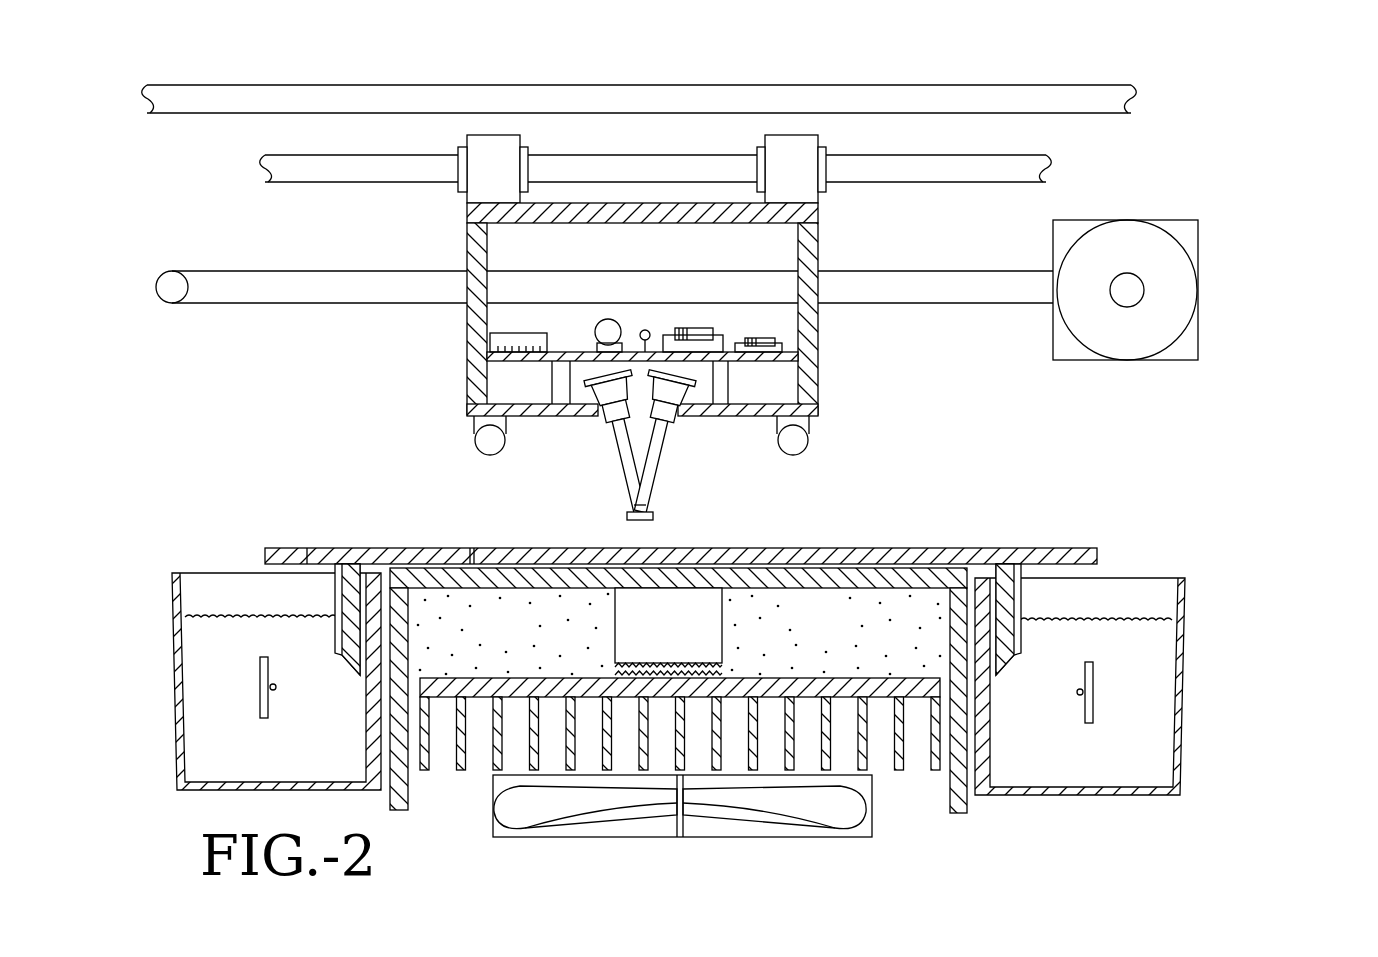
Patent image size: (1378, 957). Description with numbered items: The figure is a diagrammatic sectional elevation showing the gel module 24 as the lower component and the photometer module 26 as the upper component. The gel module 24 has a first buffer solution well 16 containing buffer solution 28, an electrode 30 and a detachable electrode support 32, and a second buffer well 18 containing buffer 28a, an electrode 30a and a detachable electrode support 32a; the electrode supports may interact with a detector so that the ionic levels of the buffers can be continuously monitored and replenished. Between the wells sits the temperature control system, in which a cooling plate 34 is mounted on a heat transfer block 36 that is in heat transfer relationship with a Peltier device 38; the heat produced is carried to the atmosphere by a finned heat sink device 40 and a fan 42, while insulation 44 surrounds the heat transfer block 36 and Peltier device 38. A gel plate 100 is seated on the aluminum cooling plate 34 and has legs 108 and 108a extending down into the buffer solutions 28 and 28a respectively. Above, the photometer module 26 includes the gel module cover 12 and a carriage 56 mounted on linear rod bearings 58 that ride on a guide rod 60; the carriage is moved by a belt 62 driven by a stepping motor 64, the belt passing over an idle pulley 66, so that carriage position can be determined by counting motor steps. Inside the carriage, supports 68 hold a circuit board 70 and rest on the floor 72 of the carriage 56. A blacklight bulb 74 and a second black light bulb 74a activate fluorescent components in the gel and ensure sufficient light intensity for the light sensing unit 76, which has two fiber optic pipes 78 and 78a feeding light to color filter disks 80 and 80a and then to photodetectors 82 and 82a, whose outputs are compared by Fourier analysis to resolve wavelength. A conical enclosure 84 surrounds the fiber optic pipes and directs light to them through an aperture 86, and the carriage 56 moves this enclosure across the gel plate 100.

The gel module cover 12 is at (1057, 101).
The first buffer solution well 16 is at (172, 700).
The buffer well 18 is at (1183, 710).
The gel module 24 is at (1232, 672).
The photometer module 26 is at (1246, 301).
The buffer solution 28 is at (212, 757).
The buffer 28a is at (1068, 767).
The electrode 30 is at (277, 688).
The electrode 30a is at (1077, 693).
The detachable electrode support 32 is at (262, 673).
The detachable electrode support 32a is at (1091, 680).
The cooling plate 34 is at (838, 580).
The heat transfer block 36 is at (659, 631).
The Peltier device 38 is at (722, 676).
The finned heat sink device 40 is at (788, 695).
The fan 42 is at (856, 806).
The insulation 44 is at (479, 631).
The carriage 56 is at (483, 321).
The linear rod bearings 58 is at (490, 168).
The guide rod 60 is at (900, 173).
The belt 62 is at (898, 272).
The stepping motor 64 is at (1110, 250).
The idle pulley 66 is at (176, 290).
The supports 68 is at (558, 385).
The circuit board 70 is at (806, 355).
The floor 72 is at (811, 407).
The blacklight bulb 74 is at (487, 442).
The second black light bulb 74a is at (791, 449).
The light sensing unit 76 is at (645, 458).
The fiber optic pipe 78 is at (623, 478).
The fiber optic pipe 78a is at (656, 468).
The color filter disk 80 is at (617, 437).
The color filter disk 80a is at (679, 432).
The photodetector 82 is at (598, 416).
The photodetector 82a is at (674, 416).
The enclosure 84 is at (664, 491).
The aperture 86 is at (641, 521).
The gel plate 100 is at (1072, 548).
The leg 108 is at (338, 636).
The leg 108a is at (1018, 596).